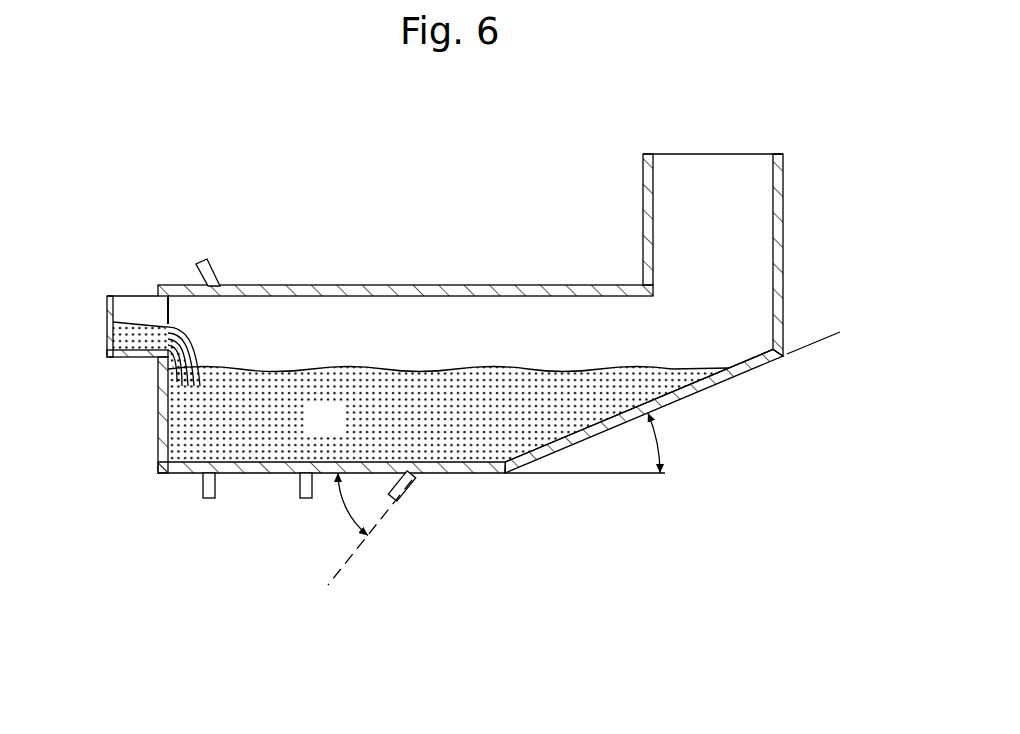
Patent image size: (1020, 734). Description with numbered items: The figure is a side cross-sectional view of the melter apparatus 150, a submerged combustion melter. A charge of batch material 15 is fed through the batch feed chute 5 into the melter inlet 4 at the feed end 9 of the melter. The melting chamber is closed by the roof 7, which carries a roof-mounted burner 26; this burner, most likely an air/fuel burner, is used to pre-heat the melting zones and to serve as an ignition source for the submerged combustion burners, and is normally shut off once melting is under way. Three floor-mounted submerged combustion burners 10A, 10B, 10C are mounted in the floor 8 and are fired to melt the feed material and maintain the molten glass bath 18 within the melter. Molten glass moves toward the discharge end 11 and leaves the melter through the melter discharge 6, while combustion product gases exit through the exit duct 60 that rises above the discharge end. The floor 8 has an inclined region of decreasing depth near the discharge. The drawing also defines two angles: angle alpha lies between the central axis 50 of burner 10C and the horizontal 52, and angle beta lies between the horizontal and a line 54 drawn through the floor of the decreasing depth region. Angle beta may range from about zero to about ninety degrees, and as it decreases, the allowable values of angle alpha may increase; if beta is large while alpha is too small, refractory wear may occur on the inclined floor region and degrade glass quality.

The melter apparatus 150 is at (614, 128).
The roof 7 is at (378, 285).
The roof-mounted burner 26 is at (208, 262).
The exit duct 60 is at (783, 215).
The batch feed chute 5 is at (108, 305).
The inlet 4 is at (168, 313).
The feed end 9 is at (158, 437).
The floor 8 is at (290, 462).
The molten glass bath 18 is at (251, 425).
The charge of batch material 15 is at (190, 343).
The melter discharge 6 is at (690, 392).
The discharge end 11 is at (740, 377).
The line through the floor of the decreasing depth region 54 is at (803, 348).
The horizontal 52 is at (592, 475).
The floor-mounted submerged combustion burner 10A is at (209, 498).
The floor-mounted submerged combustion burner 10B is at (305, 498).
The floor-mounted submerged combustion burner 10C is at (415, 494).
The central axis 50 is at (335, 575).